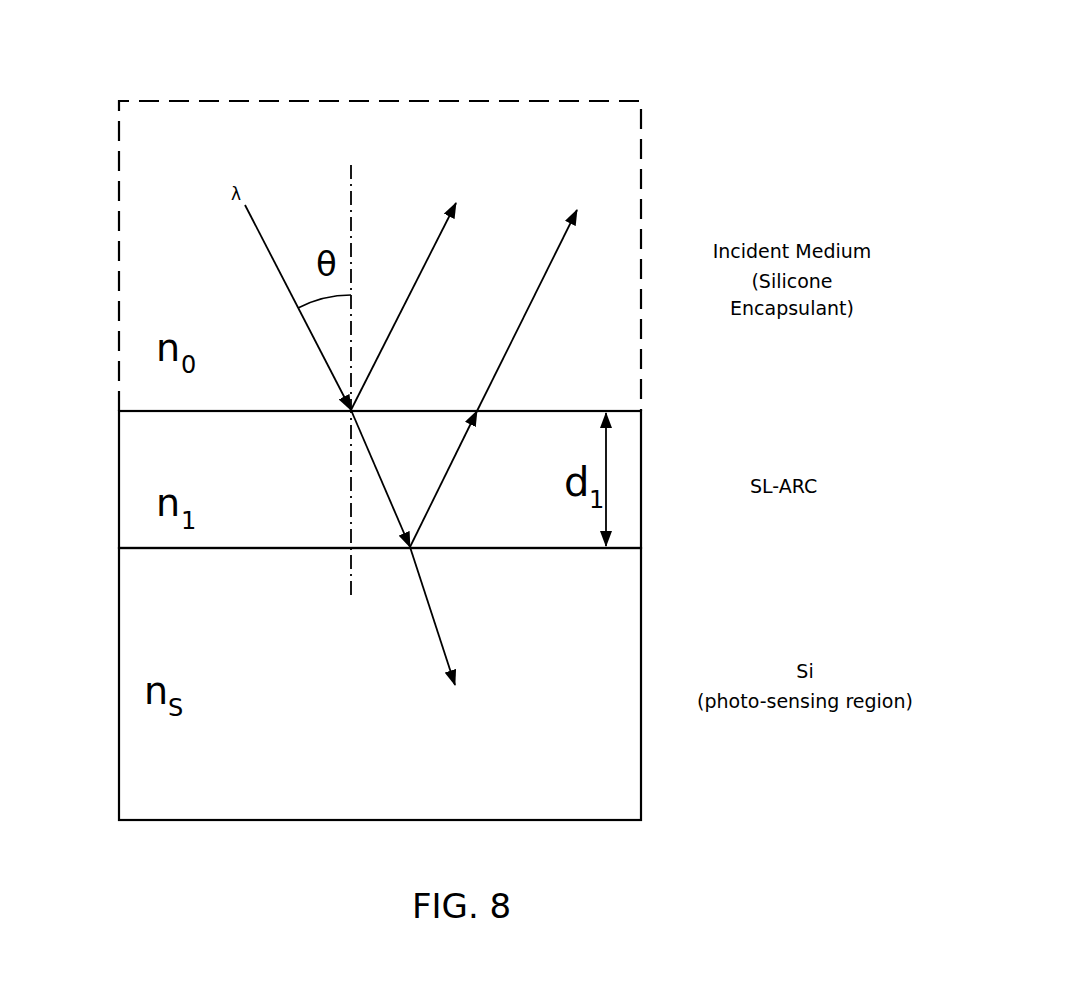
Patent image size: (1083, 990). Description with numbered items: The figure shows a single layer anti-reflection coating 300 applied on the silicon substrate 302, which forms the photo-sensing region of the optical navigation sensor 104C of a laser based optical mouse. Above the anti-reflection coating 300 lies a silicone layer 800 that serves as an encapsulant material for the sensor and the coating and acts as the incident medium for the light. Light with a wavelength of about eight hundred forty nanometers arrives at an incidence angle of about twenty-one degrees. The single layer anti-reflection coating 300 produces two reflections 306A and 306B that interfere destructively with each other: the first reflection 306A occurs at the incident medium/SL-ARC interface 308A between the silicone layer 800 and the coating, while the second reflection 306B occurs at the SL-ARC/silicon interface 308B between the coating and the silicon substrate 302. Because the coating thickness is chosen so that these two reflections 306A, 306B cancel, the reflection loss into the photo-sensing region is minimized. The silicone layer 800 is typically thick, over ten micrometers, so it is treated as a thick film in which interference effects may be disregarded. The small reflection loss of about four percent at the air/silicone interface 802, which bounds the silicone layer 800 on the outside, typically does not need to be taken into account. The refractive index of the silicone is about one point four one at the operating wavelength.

The air/silicone interface 802 is at (114, 101).
The optical navigation sensor 104C is at (734, 97).
The single layer anti-reflection coating 300 is at (641, 480).
The silicon substrate 302 is at (641, 651).
The first reflection 306A is at (418, 280).
The second reflection 306B is at (517, 325).
The incident medium/SL-ARC interface 308A is at (115, 411).
The SL-ARC/silicon interface 308B is at (115, 548).
The silicone layer 800 is at (612, 384).